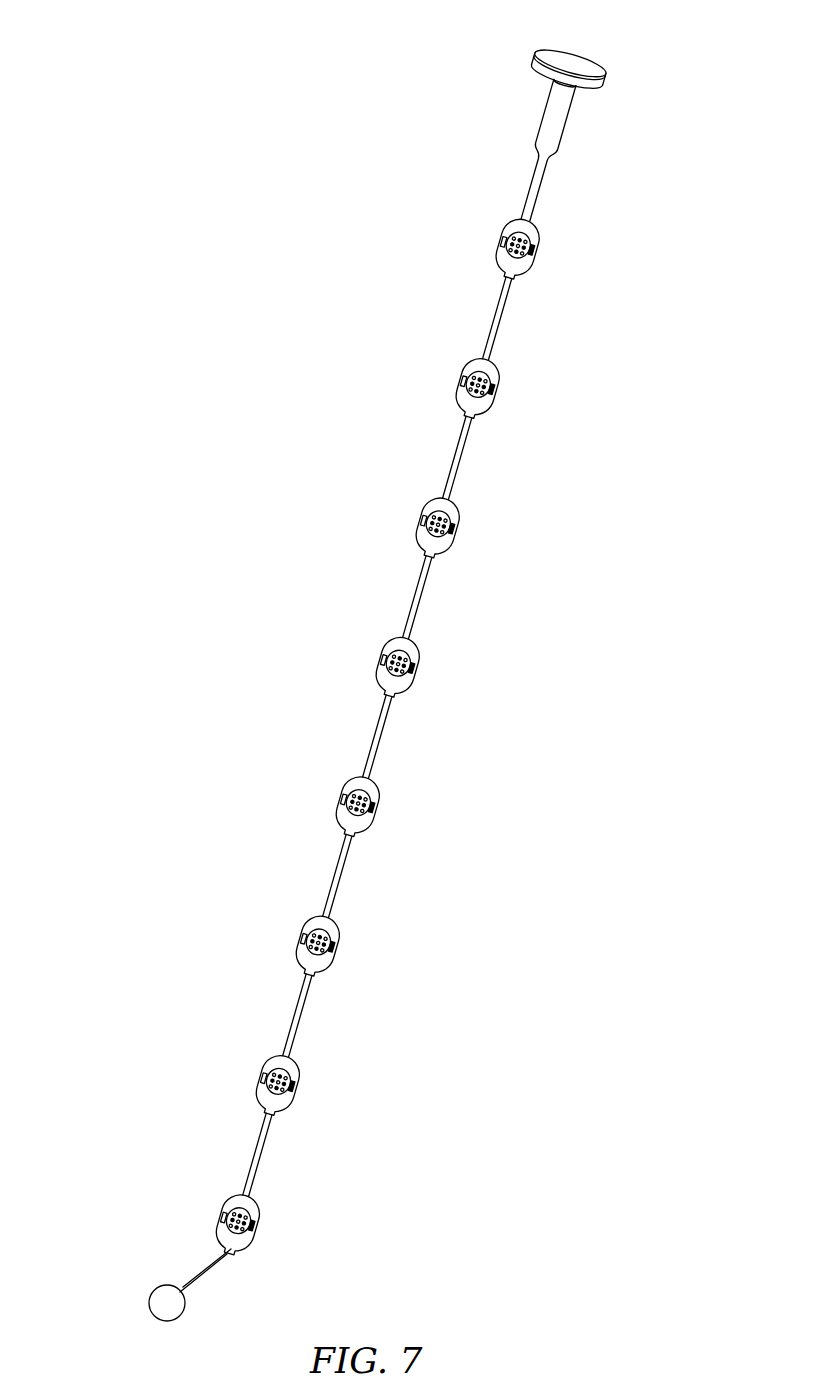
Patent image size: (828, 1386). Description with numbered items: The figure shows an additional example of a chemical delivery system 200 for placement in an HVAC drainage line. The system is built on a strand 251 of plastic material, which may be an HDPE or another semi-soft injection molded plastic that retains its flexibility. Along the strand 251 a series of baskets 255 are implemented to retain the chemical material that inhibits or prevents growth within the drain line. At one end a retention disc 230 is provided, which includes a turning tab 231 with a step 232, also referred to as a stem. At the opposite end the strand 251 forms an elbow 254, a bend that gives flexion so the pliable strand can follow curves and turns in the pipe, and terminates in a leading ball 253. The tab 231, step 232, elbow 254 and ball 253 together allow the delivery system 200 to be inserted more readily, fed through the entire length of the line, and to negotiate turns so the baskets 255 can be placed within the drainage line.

The chemical delivery system 200 is at (407, 660).
The retention disc 230 is at (533, 58).
The turning tab 231 is at (584, 58).
The step 232 is at (556, 137).
The baskets 255 is at (503, 243).
The strand 251 is at (377, 728).
The ball 253 is at (157, 1299).
The elbow 254 is at (226, 1261).